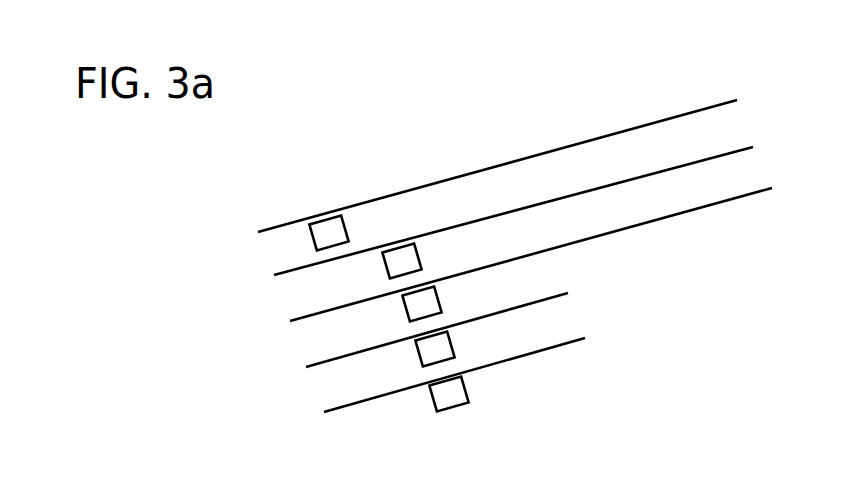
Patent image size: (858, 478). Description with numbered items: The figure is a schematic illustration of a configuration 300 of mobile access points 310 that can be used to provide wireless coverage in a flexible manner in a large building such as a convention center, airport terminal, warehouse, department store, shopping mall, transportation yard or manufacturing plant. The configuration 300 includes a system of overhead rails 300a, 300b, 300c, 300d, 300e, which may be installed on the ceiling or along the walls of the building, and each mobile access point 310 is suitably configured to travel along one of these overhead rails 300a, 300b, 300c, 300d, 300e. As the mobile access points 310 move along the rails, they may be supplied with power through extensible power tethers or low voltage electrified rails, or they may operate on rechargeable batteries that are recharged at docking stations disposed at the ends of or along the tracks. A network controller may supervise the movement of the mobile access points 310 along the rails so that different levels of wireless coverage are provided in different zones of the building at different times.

The configuration of mobile access points 300 is at (579, 32).
The overhead rail 300a is at (723, 103).
The overhead rail 300b is at (742, 148).
The overhead rail 300c is at (760, 189).
The overhead rail 300d is at (555, 296).
The overhead rail 300e is at (568, 341).
The mobile access point 310 is at (323, 225).